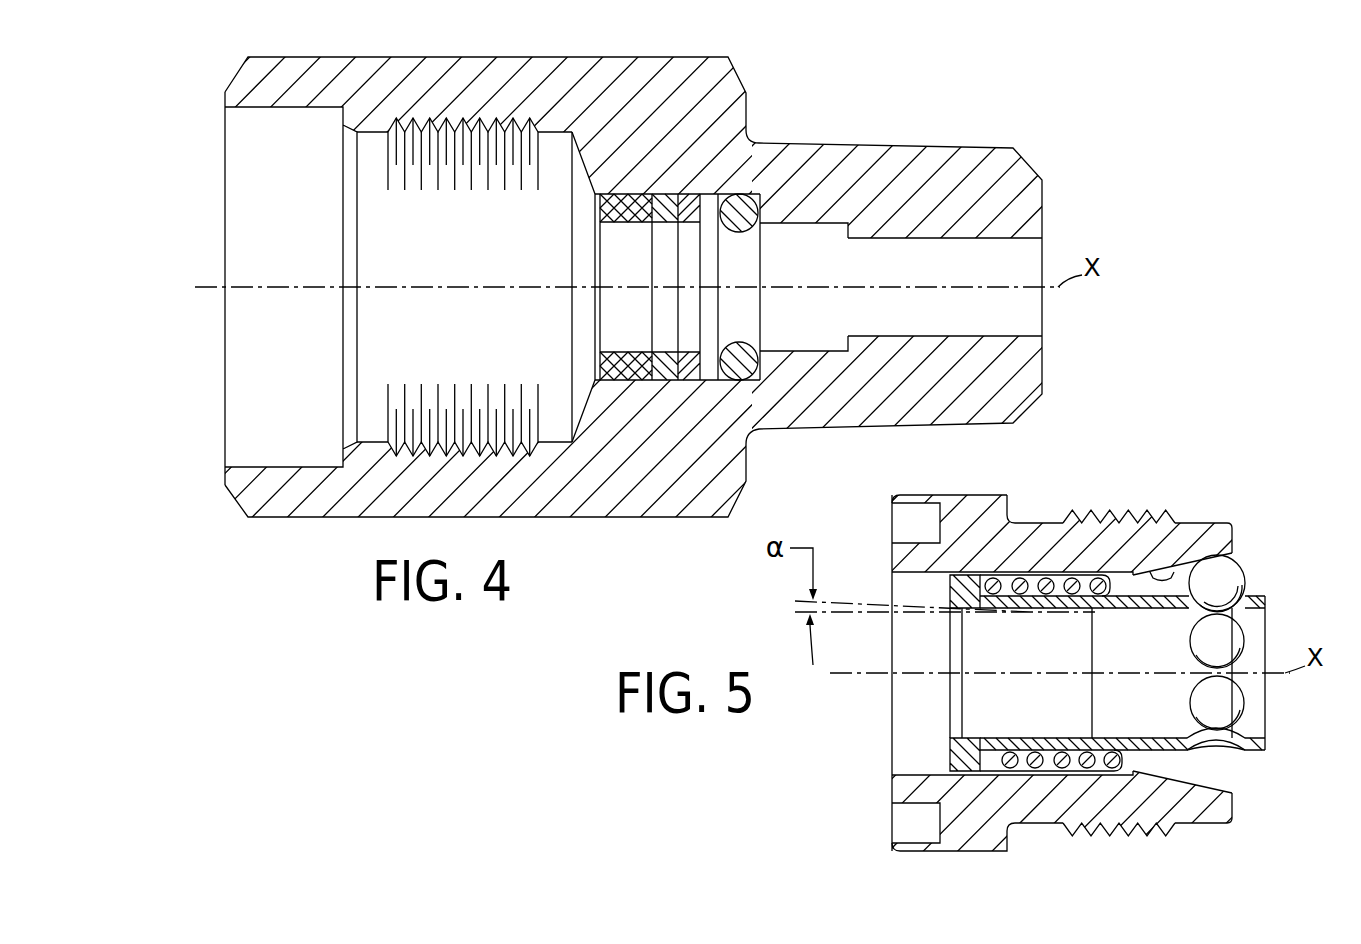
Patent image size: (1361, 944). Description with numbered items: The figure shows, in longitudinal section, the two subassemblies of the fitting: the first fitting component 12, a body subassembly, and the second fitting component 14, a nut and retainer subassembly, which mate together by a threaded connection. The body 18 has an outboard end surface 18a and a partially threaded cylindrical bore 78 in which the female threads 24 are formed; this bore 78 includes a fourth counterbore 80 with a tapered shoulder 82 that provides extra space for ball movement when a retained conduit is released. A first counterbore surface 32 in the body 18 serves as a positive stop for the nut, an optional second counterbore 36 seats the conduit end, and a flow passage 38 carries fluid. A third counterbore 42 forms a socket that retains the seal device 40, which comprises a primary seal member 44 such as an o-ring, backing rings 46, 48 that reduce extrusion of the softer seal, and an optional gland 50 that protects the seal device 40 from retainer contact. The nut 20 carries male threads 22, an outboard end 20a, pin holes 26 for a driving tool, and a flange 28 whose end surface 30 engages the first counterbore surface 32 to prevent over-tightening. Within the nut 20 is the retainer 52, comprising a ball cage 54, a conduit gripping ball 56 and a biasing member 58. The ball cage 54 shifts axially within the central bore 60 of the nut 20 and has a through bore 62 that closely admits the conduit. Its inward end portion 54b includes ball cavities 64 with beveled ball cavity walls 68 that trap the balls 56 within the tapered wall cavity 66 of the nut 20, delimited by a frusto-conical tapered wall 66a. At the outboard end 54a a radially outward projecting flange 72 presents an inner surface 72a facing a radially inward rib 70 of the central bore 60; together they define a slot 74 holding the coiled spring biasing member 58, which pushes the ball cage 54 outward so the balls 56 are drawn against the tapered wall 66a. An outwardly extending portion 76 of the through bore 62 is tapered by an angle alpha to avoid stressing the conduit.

In FIG. 4, the first fitting component 12 is at (952, 112).
In FIG. 5, the second fitting component 14 is at (822, 764).
In FIG. 4, the body 18 is at (805, 142).
In FIG. 4, the outboard end surface 18a is at (226, 106).
In FIG. 5, the nut 20 is at (1172, 800).
In FIG. 5, the outboard end 20a is at (892, 793).
In FIG. 5, the male threads 22 is at (1100, 512).
In FIG. 4, the female threads 24 is at (432, 192).
In FIG. 5, the pin holes 26 is at (900, 517).
In FIG. 5, the flange 28 is at (948, 495).
In FIG. 5, the end surface 30 is at (1010, 512).
In FIG. 4, the first counterbore surface 32 is at (340, 464).
In FIG. 4, the second counterbore 36 is at (848, 230).
In FIG. 4, the flow passage 38 is at (1018, 335).
In FIG. 4, the seal device 40 is at (648, 420).
In FIG. 4, the third counterbore 42 is at (746, 383).
In FIG. 4, the primary seal member 44 is at (742, 355).
In FIG. 4, the backing ring 46 is at (695, 350).
In FIG. 4, the backing ring 48 is at (665, 353).
In FIG. 4, the gland 50 is at (605, 352).
In FIG. 5, the retainer 52 is at (1042, 628).
In FIG. 5, the ball cage 54 is at (1023, 742).
In FIG. 5, the outboard end 54a is at (950, 770).
In FIG. 5, the inward end portion 54b is at (1250, 690).
In FIG. 5, the ball 56 is at (1225, 585).
In FIG. 5, the biasing member 58 is at (1095, 826).
In FIG. 5, the central bore 60 is at (915, 575).
In FIG. 5, the through bore 62 is at (1112, 612).
In FIG. 5, the ball cavities 64 is at (1220, 642).
In FIG. 5, the tapered wall cavity 66 is at (1183, 772).
In FIG. 5, the tapered wall 66a is at (1165, 572).
In FIG. 5, the ball cavity wall 68 is at (1190, 770).
In FIG. 5, the rib 70 is at (1135, 743).
In FIG. 5, the flange 72 is at (962, 598).
In FIG. 5, the inner surface 72a is at (958, 743).
In FIG. 5, the slot 74 is at (1023, 770).
In FIG. 5, the outwardly extending portion 76 is at (1087, 742).
In FIG. 4, the partially threaded cylindrical bore 78 is at (378, 165).
In FIG. 4, the fourth counterbore 80 is at (580, 216).
In FIG. 4, the tapered shoulder 82 is at (585, 160).